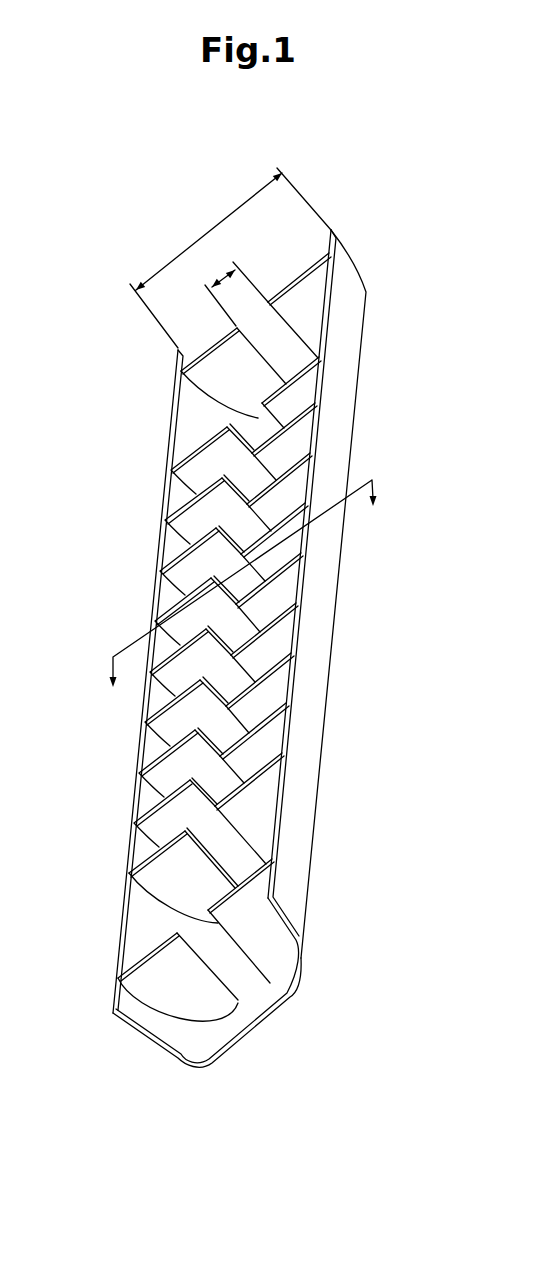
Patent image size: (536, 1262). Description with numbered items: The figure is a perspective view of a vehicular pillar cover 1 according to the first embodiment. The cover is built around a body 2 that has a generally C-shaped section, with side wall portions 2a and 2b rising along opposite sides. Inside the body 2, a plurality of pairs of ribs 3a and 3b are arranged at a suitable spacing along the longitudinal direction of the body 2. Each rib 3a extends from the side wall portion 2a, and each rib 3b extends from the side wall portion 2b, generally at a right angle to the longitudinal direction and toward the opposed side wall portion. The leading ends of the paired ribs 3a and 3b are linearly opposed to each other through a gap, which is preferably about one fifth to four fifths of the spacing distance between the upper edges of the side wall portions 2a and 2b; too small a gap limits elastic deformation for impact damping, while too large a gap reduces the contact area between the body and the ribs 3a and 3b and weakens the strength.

The vehicular pillar cover 1 is at (350, 236).
The body 2 is at (285, 1030).
The side wall portion 2a is at (305, 688).
The side wall portion 2b is at (137, 748).
The rib 3a is at (291, 508).
The rib 3b is at (183, 554).